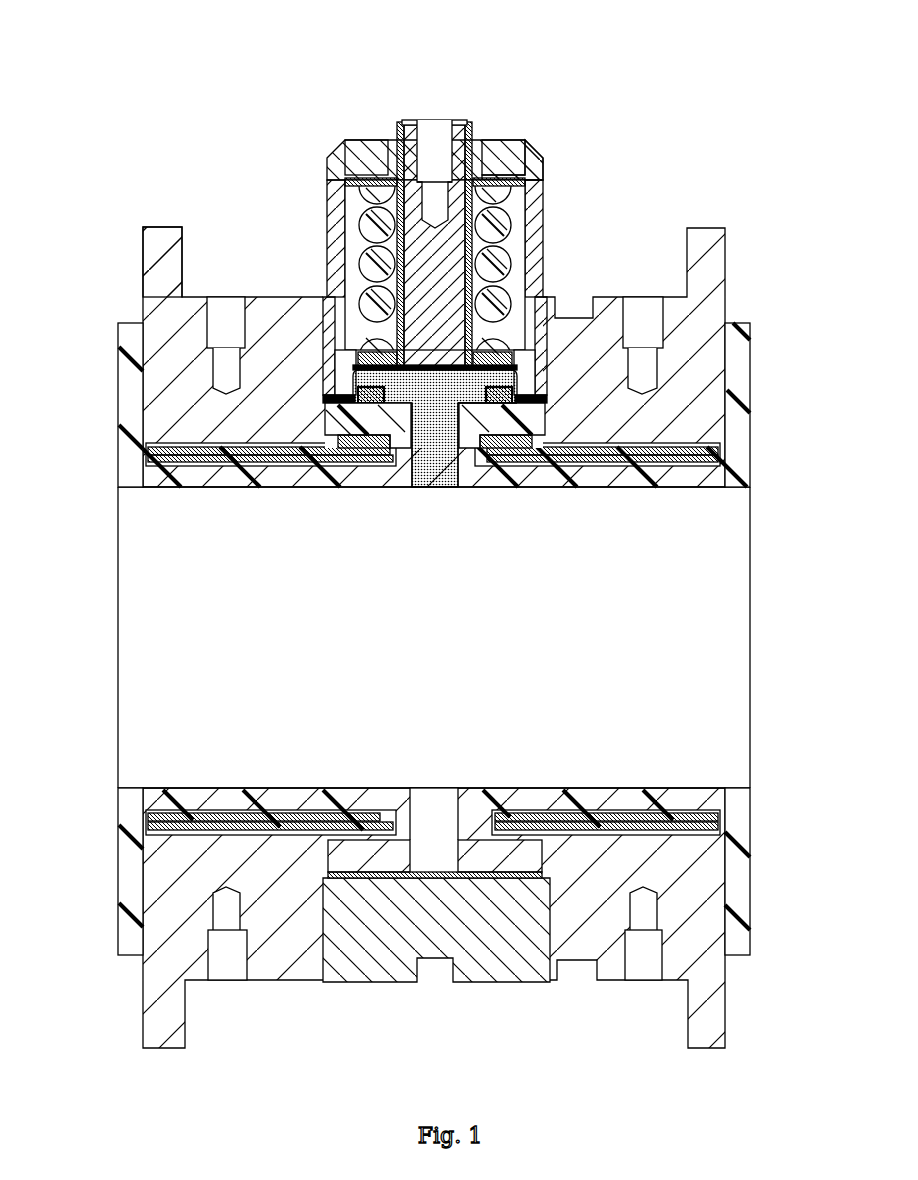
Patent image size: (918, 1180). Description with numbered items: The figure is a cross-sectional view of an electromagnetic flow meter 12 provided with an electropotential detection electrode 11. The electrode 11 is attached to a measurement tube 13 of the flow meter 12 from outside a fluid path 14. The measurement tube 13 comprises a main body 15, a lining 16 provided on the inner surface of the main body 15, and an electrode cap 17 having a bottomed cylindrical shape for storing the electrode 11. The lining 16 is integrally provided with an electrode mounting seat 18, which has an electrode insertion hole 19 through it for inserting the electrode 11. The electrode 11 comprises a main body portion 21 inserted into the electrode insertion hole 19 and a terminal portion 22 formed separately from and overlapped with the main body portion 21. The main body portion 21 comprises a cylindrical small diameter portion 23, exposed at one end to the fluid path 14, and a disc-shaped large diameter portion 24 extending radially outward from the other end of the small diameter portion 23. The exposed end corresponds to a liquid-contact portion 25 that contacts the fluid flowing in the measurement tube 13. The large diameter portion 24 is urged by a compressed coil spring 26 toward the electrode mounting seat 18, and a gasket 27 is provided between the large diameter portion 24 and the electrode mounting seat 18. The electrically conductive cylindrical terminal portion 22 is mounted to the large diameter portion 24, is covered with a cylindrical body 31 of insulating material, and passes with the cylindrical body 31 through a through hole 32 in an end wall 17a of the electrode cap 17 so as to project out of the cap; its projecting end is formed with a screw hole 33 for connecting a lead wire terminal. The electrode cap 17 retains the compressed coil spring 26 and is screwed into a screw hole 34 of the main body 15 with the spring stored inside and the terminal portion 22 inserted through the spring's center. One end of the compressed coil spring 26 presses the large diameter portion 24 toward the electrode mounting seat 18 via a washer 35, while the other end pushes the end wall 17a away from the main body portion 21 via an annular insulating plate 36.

The electropotential detection electrode 11 is at (432, 492).
The electromagnetic flow meter 12 is at (126, 73).
The measurement tube 13 is at (157, 224).
The fluid path 14 is at (160, 590).
The main body 15 is at (142, 312).
The lining 16 is at (118, 378).
The electrode cap 17 is at (325, 195).
The end wall 17a is at (378, 147).
The electrode mounting seat 18 is at (300, 447).
The electrode insertion hole 19 is at (446, 480).
The main body portion 21 is at (510, 572).
The terminal portion 22 is at (462, 122).
The small diameter portion 23 is at (465, 470).
The large diameter portion 24 is at (545, 385).
The liquid-contact portion 25 is at (420, 487).
The compressed coil spring 26 is at (540, 222).
The gasket 27 is at (353, 440).
The cylindrical body 31 is at (540, 160).
The through hole 32 is at (340, 150).
The screw hole 33 is at (437, 150).
The screw hole 34 is at (342, 300).
The washer 35 is at (568, 320).
The annular insulating plate 36 is at (540, 200).